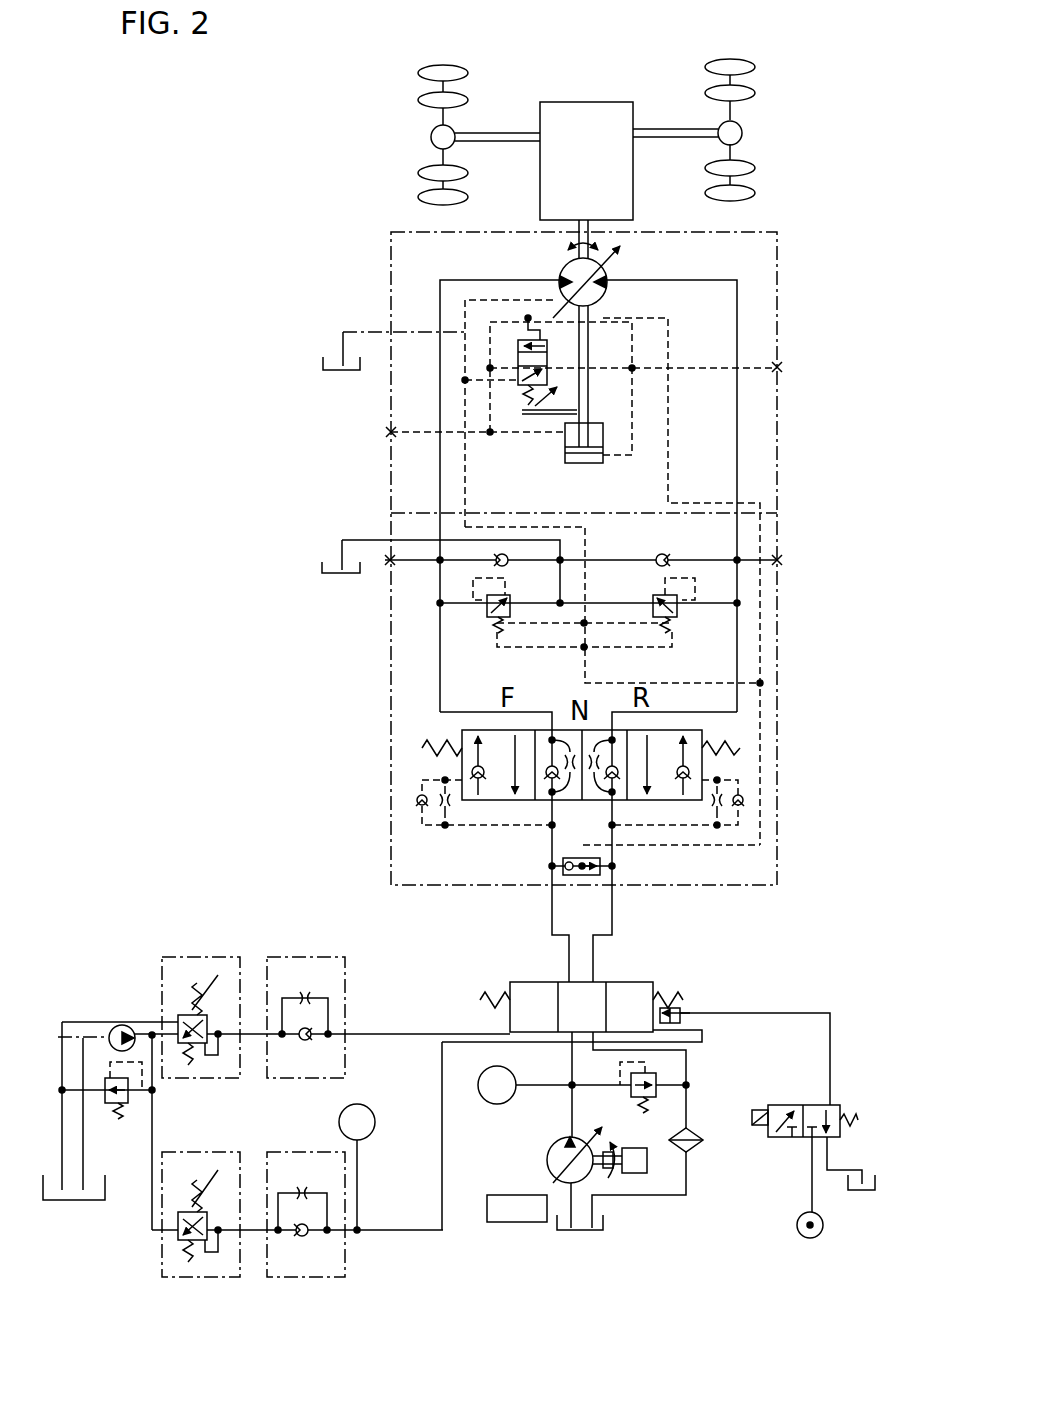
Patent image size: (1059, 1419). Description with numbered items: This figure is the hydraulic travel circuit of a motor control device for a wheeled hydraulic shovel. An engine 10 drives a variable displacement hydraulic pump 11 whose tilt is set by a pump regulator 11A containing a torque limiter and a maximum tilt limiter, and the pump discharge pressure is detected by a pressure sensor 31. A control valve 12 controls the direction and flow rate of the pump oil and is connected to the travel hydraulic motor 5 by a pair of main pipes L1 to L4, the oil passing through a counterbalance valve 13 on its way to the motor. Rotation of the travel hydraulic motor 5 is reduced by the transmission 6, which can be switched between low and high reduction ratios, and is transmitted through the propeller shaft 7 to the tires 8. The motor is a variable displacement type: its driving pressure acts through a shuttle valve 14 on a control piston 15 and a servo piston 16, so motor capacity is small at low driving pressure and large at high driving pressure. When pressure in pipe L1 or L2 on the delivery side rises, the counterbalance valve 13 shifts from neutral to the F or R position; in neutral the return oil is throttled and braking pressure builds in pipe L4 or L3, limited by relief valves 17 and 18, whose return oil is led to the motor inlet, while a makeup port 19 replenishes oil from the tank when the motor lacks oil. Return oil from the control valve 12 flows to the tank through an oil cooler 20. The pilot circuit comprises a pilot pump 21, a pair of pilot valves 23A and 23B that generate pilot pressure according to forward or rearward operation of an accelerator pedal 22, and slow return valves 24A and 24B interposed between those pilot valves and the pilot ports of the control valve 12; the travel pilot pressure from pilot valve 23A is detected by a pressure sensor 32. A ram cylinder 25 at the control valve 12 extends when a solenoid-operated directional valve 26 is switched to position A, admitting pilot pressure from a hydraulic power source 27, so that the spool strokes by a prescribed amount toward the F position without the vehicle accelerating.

The travel hydraulic motor 5 is at (620, 254).
The transmission 6 is at (633, 193).
The propeller shaft 7 is at (500, 141).
The tires 8 is at (430, 72).
The engine 10 is at (635, 1175).
The hydraulic pump 11 is at (548, 1164).
The pump regulator 11A is at (522, 1225).
The control valve 12 is at (655, 982).
The counterbalance valve 13 is at (462, 742).
The shuttle valve 14 is at (570, 858).
The control piston 15 is at (562, 461).
The servo piston 16 is at (550, 350).
The relief valve 17 is at (492, 620).
The overload relief valve 18 is at (674, 620).
The makeup port 19 is at (390, 540).
The oil cooler 20 is at (697, 1148).
The pilot pump 21 is at (110, 1030).
The accelerator pedal 22 is at (192, 1010).
The pilot valve 23A is at (172, 1280).
The pilot valve 23B is at (178, 1080).
The slow return valve 24A is at (280, 1280).
The slow return valve 24B is at (270, 1080).
The ram cylinder 25 is at (688, 1012).
The solenoid-operated directional valve 26 is at (840, 1105).
The hydraulic power source 27 is at (820, 1237).
The pressure sensor 31 is at (483, 1096).
The pressure sensor 32 is at (340, 1130).
The main pipe L1 is at (551, 907).
The main pipe L2 is at (612, 907).
The main pipe L3 is at (438, 582).
The main pipe L4 is at (737, 468).